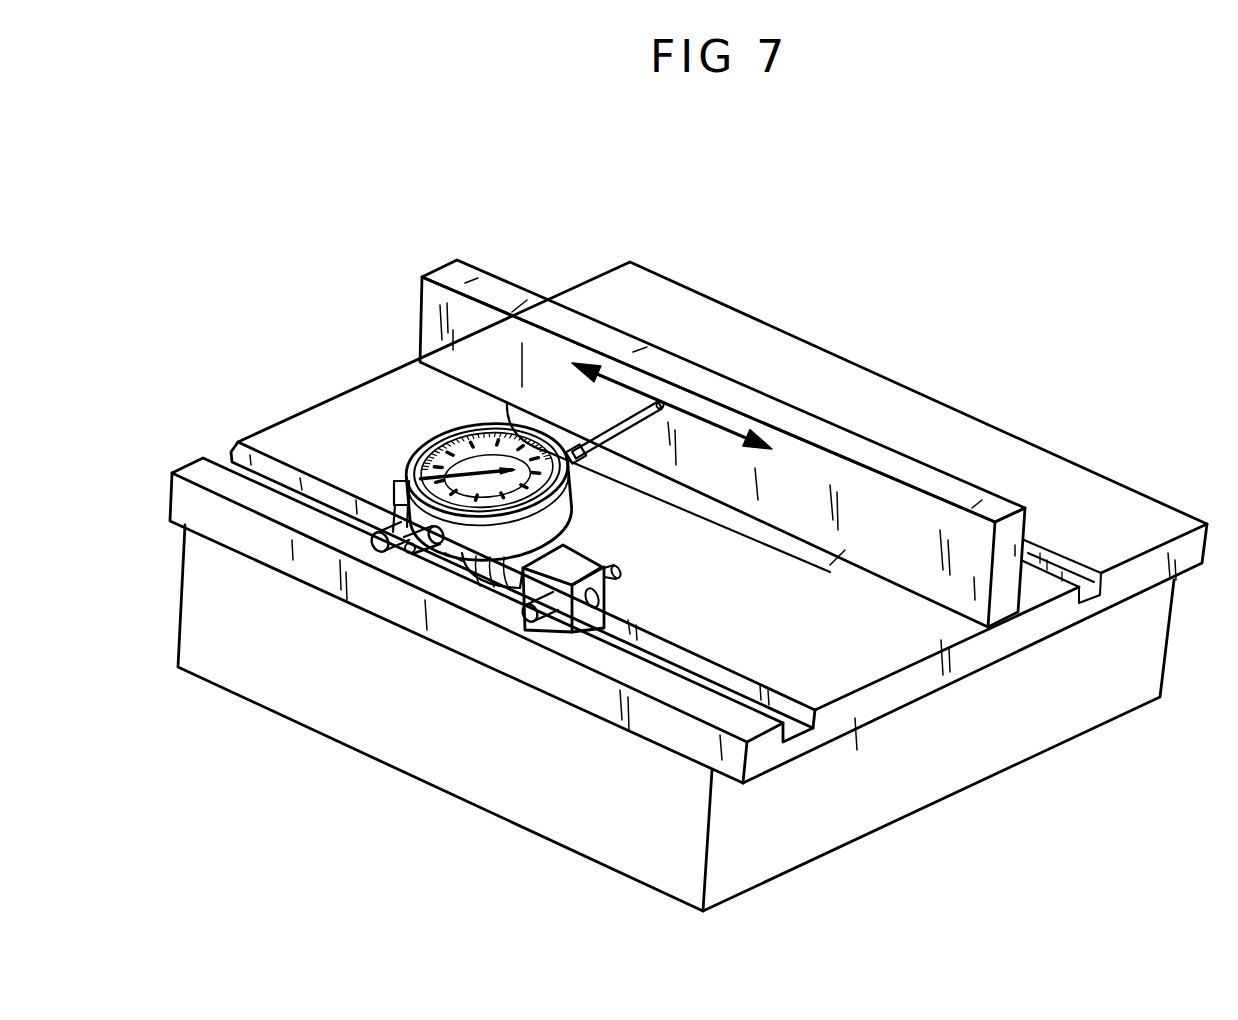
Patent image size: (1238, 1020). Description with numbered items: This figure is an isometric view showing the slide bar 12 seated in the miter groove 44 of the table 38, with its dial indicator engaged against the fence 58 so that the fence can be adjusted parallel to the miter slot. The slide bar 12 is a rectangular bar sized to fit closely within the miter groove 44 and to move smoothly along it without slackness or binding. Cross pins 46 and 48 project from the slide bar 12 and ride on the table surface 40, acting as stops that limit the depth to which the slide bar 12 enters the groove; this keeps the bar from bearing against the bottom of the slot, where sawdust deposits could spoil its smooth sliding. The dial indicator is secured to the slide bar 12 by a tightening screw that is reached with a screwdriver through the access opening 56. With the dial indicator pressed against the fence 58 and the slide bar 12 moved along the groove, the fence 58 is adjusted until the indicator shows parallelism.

The slide bar 12 is at (575, 552).
The table 38 is at (868, 834).
The table surface 40 is at (835, 645).
The miter groove 44 is at (687, 667).
The cross pin 46 is at (377, 552).
The cross pin 48 is at (529, 622).
The access opening 56 is at (430, 440).
The fence 58 is at (773, 415).